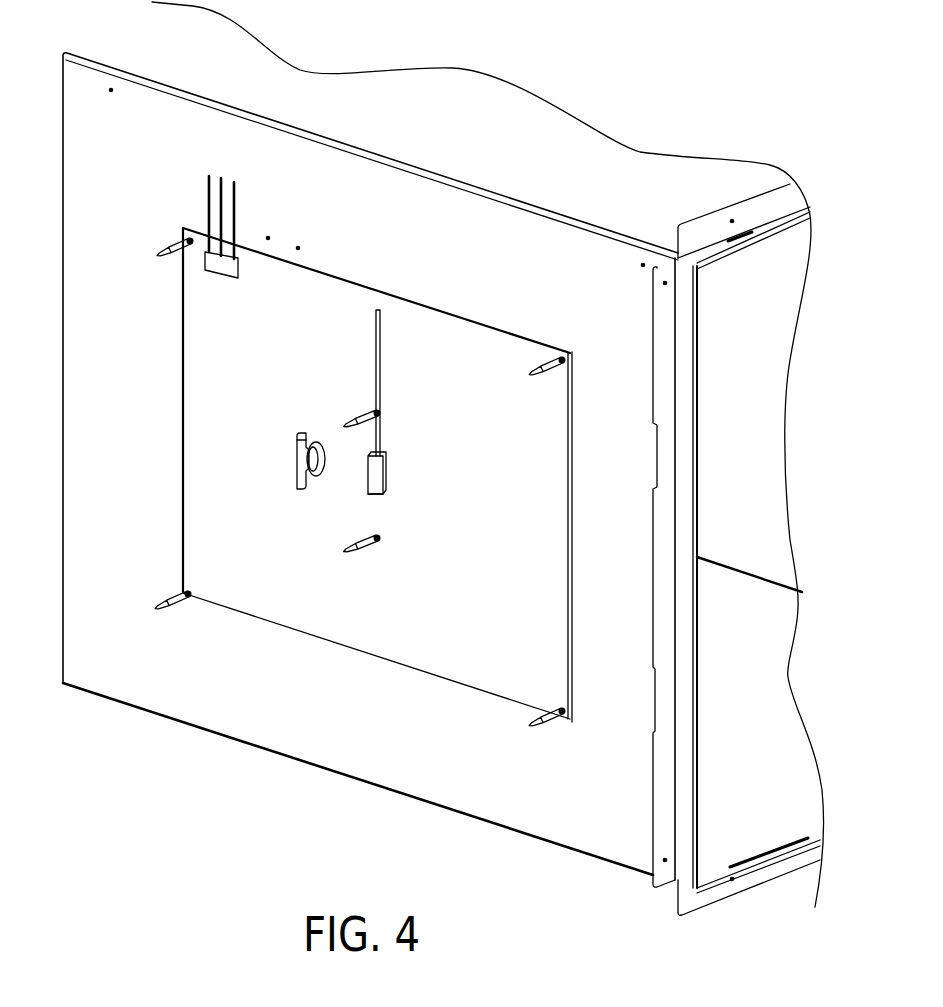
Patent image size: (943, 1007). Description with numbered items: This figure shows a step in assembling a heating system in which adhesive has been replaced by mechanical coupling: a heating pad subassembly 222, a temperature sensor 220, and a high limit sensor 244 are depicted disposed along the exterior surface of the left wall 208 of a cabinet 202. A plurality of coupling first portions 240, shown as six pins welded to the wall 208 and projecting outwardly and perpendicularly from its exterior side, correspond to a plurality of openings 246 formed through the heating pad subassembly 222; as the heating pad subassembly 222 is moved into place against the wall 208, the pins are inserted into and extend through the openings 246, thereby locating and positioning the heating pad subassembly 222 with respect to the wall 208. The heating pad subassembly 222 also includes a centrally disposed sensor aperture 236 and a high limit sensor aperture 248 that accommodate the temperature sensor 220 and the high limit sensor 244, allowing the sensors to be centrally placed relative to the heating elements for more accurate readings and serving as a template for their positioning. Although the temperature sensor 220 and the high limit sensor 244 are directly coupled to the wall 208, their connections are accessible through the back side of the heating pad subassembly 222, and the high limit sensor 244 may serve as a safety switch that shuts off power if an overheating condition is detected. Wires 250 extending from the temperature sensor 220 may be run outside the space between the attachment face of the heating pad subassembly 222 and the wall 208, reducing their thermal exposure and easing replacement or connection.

The cabinet 202 is at (519, 123).
The left wall 208 is at (513, 266).
The temperature sensor 220 is at (383, 471).
The heating pad subassembly 222 is at (210, 509).
The sensor aperture 236 is at (376, 497).
The coupling first portions 240 is at (177, 250).
The high limit sensor 244 is at (297, 453).
The openings 246 is at (187, 238).
The high limit sensor aperture 248 is at (297, 447).
The wires 250 is at (383, 358).